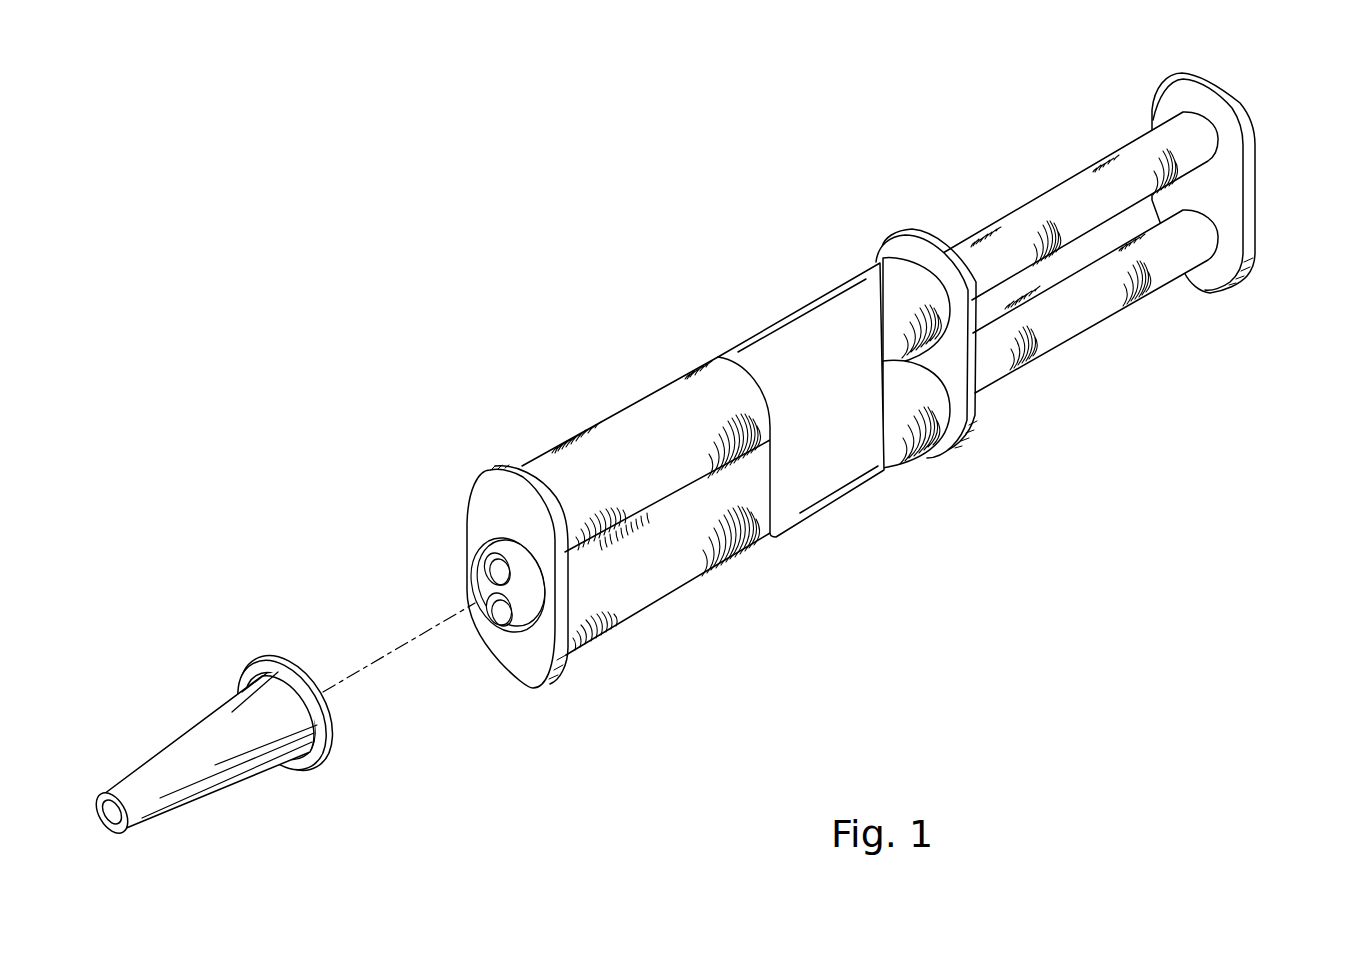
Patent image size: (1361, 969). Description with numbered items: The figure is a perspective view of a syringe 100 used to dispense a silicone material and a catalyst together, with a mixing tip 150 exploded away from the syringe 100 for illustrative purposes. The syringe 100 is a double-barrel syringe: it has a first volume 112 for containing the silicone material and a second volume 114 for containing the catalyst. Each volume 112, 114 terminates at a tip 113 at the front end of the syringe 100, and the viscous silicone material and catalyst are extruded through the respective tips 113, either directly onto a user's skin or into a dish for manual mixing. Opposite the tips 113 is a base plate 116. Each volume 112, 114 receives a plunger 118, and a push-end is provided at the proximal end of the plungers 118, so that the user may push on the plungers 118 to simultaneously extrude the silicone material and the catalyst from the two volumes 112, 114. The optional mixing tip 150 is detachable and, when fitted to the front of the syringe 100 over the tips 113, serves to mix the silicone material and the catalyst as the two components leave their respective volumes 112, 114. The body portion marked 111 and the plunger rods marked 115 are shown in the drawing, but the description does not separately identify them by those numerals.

The syringe 100 is at (722, 456).
The cartridge body sleeve 111 is at (795, 338).
The first volume 112 is at (648, 428).
The tip 113 is at (493, 569).
The second volume 114 is at (677, 572).
The plunger rod 115 is at (1076, 190).
The base plate 116 is at (975, 412).
The plunger 118 is at (1257, 181).
The mixing tip 150 is at (213, 702).